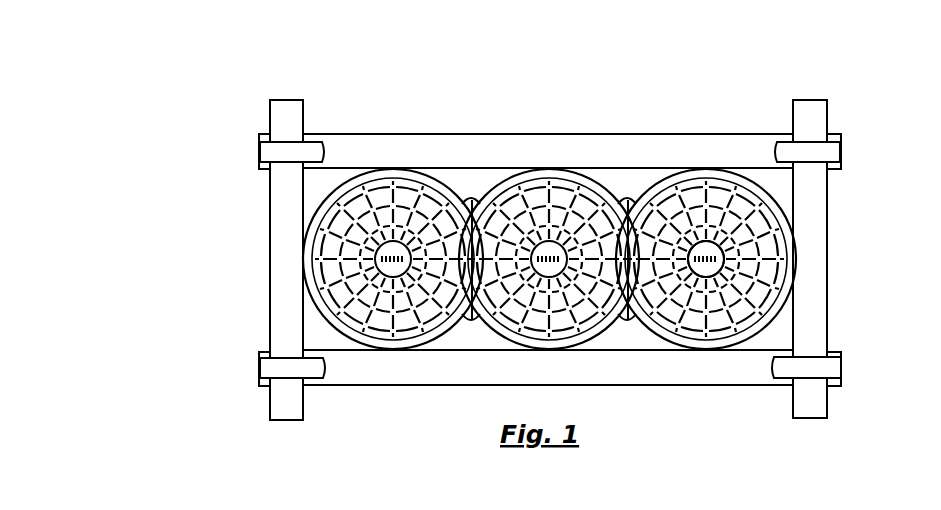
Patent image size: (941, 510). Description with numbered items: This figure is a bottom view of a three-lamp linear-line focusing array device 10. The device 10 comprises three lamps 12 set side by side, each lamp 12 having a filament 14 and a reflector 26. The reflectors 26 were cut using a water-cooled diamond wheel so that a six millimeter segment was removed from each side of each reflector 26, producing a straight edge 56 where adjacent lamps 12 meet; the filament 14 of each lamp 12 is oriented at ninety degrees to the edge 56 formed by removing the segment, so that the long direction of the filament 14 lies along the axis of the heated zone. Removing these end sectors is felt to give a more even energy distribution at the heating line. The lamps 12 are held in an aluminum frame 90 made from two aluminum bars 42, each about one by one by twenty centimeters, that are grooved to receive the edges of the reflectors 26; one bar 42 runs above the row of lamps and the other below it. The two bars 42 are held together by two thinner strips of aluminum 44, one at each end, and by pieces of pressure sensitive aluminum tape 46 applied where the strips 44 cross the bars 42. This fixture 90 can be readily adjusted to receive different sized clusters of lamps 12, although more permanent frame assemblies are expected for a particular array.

The three-lamp linear-line focusing array device 10 is at (561, 119).
The lamp 12 is at (798, 230).
The filament 14 is at (710, 243).
The reflector 26 is at (498, 322).
The aluminum bar 42 is at (660, 376).
The aluminum strip 44 is at (280, 196).
The pressure sensitive aluminum tape 46 is at (263, 150).
The edge 56 is at (480, 222).
The aluminum frame 90 is at (252, 294).